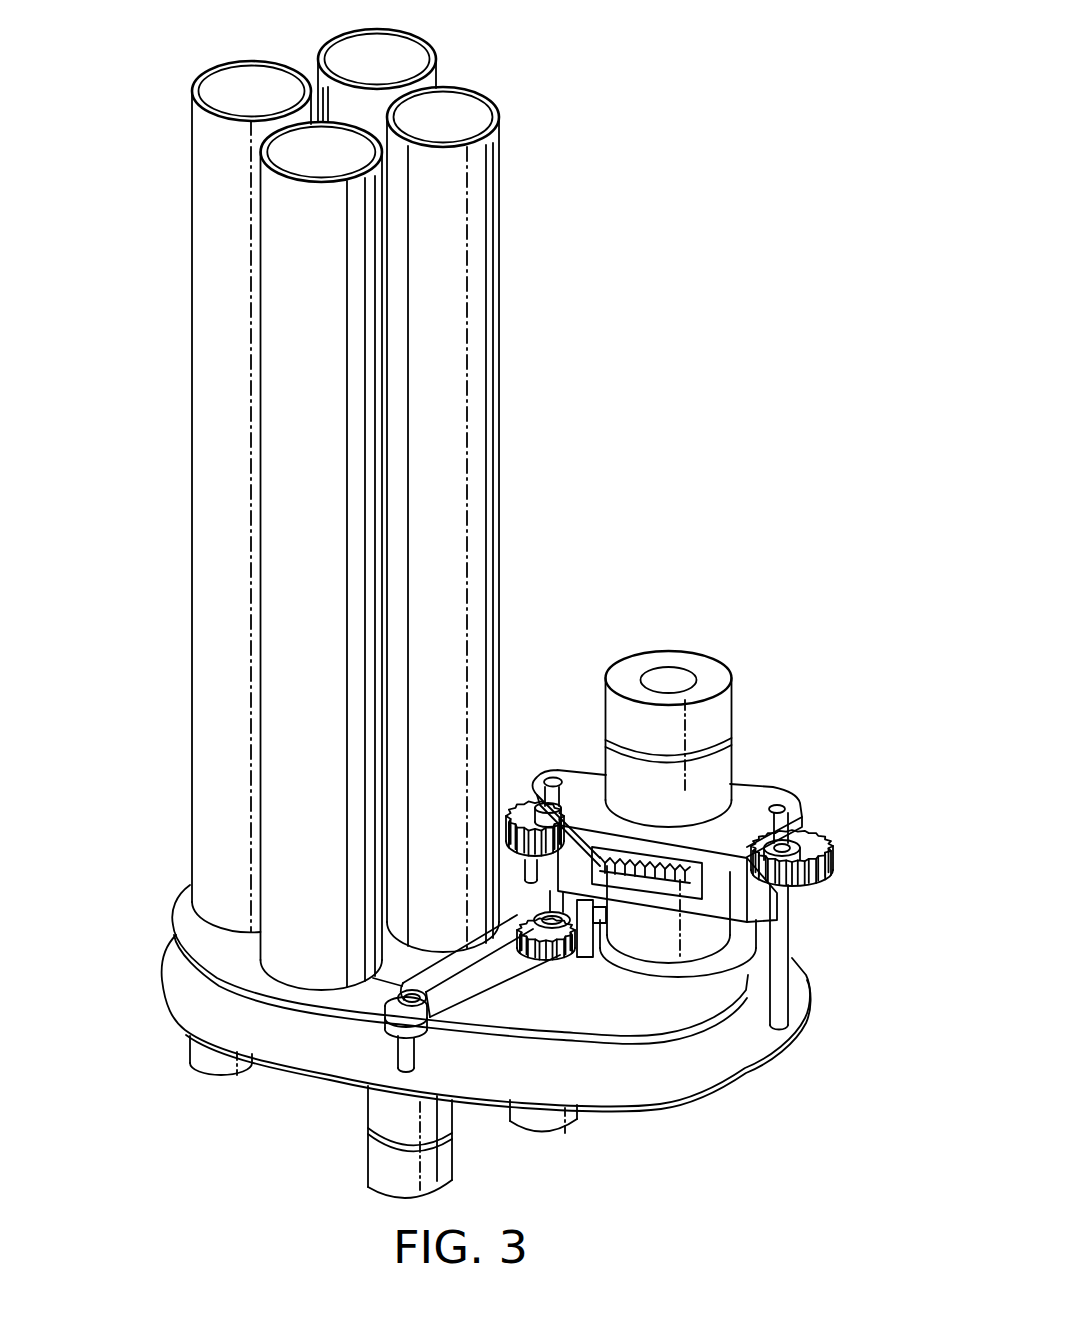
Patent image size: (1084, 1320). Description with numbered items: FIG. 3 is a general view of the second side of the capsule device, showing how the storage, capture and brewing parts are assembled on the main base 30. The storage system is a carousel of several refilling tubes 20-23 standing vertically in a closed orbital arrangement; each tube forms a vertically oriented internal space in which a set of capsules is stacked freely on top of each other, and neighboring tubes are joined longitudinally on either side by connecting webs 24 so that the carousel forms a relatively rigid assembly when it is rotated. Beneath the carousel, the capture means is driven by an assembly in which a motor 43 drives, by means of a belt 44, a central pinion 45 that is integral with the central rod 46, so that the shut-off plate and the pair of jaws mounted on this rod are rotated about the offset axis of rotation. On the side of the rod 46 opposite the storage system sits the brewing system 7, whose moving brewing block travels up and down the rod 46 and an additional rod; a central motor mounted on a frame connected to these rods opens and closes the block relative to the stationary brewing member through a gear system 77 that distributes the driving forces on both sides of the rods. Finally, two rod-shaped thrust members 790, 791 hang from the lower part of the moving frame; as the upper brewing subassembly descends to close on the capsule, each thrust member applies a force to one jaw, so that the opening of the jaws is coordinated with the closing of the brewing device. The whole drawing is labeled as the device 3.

The tube turret assembly 3 is at (168, 527).
The refilling tubes 20-23 is at (447, 22).
The connecting webs 24 is at (397, 457).
The main base 30 is at (285, 1077).
The motor 43 is at (450, 1160).
The belt 44 is at (492, 990).
The central pinion 45 is at (557, 938).
The central rod 46 is at (543, 807).
The brewing system 7 is at (774, 735).
The gear system 77 is at (848, 855).
The thrust member 790 is at (593, 947).
The thrust member 791 is at (585, 933).